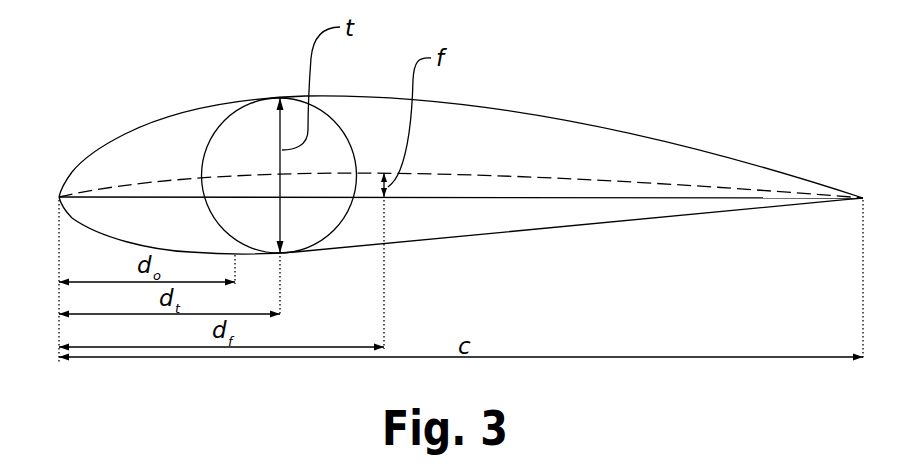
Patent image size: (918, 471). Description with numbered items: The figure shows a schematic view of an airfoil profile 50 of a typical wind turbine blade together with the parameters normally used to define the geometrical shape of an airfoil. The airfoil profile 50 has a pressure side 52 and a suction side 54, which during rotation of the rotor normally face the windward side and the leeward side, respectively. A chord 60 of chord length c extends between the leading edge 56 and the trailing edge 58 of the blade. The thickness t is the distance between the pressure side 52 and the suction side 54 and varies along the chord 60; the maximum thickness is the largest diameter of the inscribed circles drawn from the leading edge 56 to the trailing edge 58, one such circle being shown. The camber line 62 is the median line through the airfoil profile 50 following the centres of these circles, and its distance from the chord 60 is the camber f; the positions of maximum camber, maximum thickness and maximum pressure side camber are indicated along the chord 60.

The airfoil profile 50 is at (445, 155).
The pressure side 52 is at (616, 217).
The suction side 54 is at (560, 116).
The leading edge 56 is at (59, 197).
The trailing edge 58 is at (863, 196).
The chord 60 is at (658, 197).
The camber line 62 is at (452, 162).